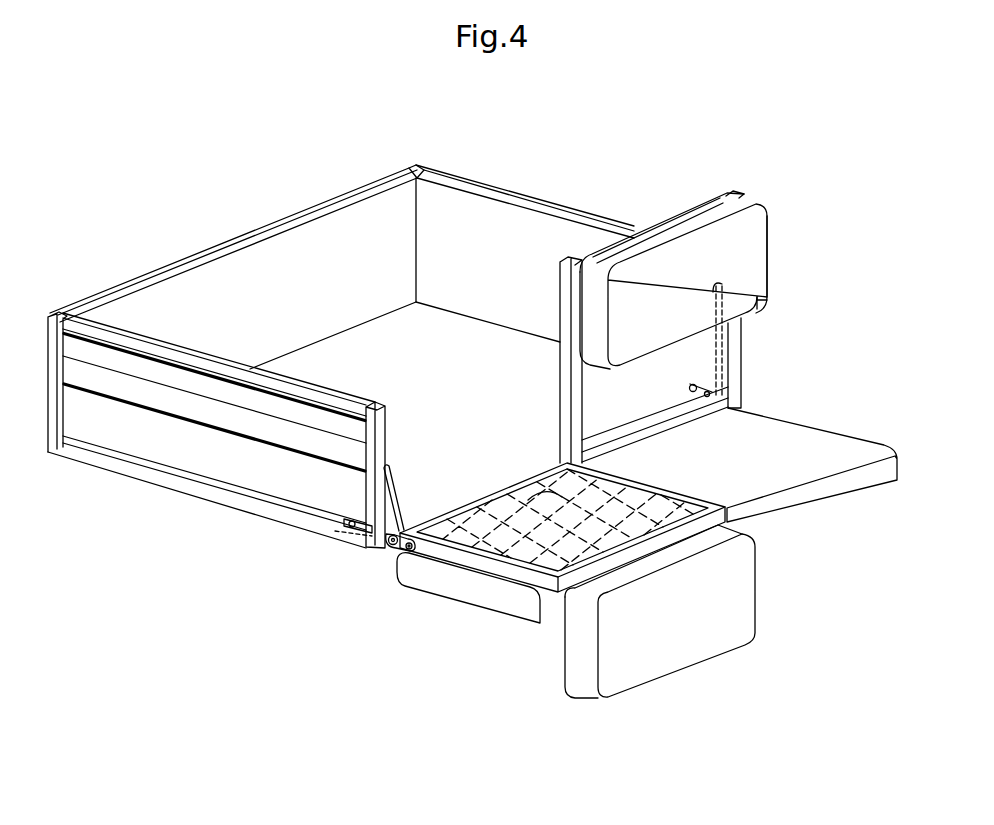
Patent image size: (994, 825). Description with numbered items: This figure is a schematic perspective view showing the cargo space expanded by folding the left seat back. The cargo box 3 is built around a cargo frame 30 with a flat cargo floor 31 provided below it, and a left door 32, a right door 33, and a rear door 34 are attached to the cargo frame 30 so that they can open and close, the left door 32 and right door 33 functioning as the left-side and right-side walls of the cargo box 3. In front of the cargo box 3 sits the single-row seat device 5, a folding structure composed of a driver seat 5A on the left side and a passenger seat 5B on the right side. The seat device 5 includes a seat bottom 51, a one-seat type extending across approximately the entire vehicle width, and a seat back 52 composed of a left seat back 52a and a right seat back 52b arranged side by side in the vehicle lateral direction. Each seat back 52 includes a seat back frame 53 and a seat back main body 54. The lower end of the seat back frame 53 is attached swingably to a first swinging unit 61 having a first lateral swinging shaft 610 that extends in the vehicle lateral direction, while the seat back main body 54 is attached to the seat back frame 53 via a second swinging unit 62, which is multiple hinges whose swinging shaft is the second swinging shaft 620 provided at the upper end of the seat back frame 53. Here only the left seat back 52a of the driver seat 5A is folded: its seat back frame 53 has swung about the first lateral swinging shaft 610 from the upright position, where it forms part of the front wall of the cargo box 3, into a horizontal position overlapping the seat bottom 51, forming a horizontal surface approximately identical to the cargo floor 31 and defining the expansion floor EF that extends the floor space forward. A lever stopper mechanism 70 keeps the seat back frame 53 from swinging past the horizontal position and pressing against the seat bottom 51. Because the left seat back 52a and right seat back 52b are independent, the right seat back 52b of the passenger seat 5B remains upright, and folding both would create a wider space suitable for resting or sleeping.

The cargo box 3 is at (341, 333).
The cargo frame 30 is at (52, 422).
The cargo floor 31 is at (348, 353).
The left door 32 is at (216, 414).
The right door 33 is at (482, 192).
The rear door 34 is at (233, 247).
The seat device 5 is at (647, 452).
The driver seat 5A is at (812, 494).
The passenger seat 5B is at (501, 604).
The seat bottom 51 is at (737, 498).
The seat back 52 is at (673, 267).
The left seat back 52a is at (646, 232).
The right seat back 52b is at (688, 645).
The seat back frame 53 is at (738, 343).
The seat back main body 54 is at (634, 344).
The first swinging unit 61 is at (337, 578).
The first lateral swinging shaft 610 is at (382, 538).
The second swinging unit 62 is at (585, 552).
The second swinging shaft 620 is at (643, 562).
The lever stopper mechanism 70 is at (406, 499).
The expansion floor EF is at (548, 500).